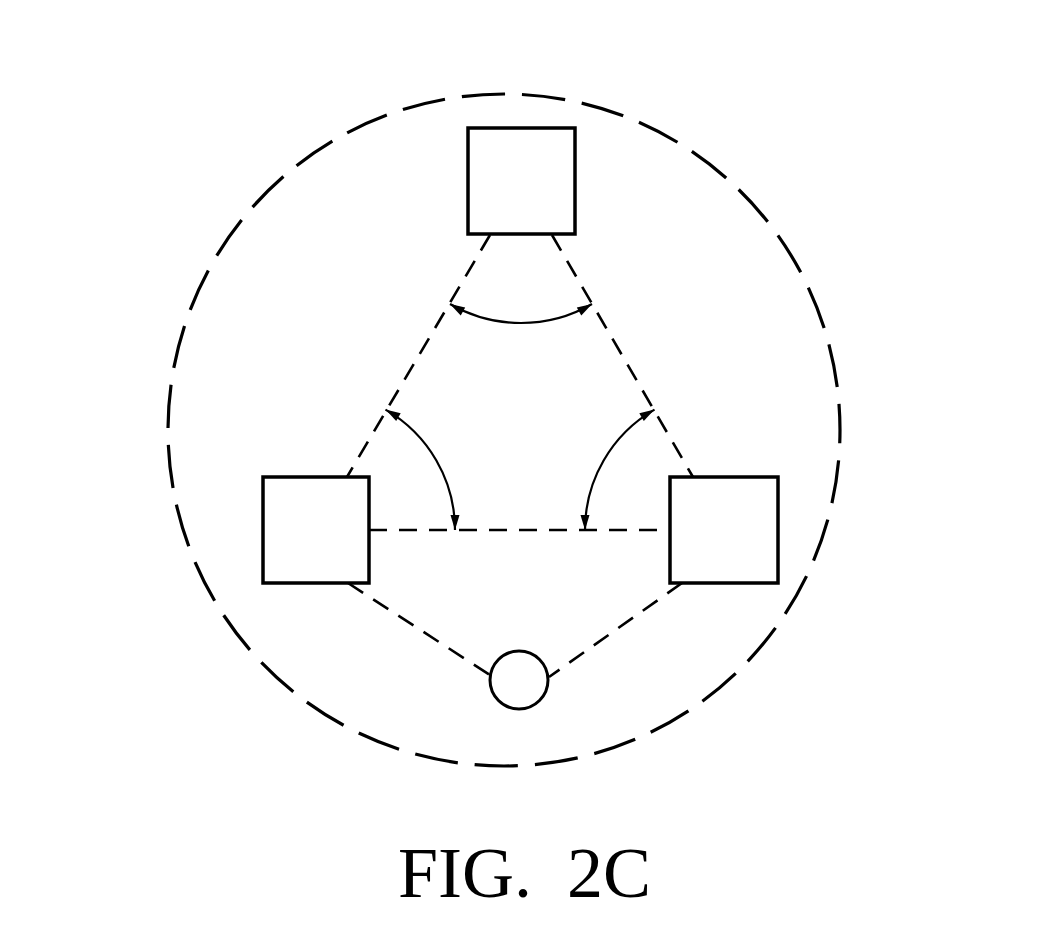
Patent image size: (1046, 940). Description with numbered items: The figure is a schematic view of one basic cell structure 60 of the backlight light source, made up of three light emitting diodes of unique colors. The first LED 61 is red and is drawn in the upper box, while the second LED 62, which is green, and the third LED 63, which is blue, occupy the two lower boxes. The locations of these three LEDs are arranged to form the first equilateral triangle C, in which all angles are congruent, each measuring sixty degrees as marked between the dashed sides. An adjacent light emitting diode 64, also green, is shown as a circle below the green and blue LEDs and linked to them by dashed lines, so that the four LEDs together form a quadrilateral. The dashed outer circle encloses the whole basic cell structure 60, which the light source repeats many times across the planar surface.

The basic cell structure 60 is at (90, 47).
The first light emitting diode 61 is at (575, 180).
The second light emitting diode 62 is at (263, 530).
The third light emitting diode 63 is at (778, 527).
The adjacent light emitting diode 64 is at (549, 690).
The first equilateral triangle C is at (625, 353).